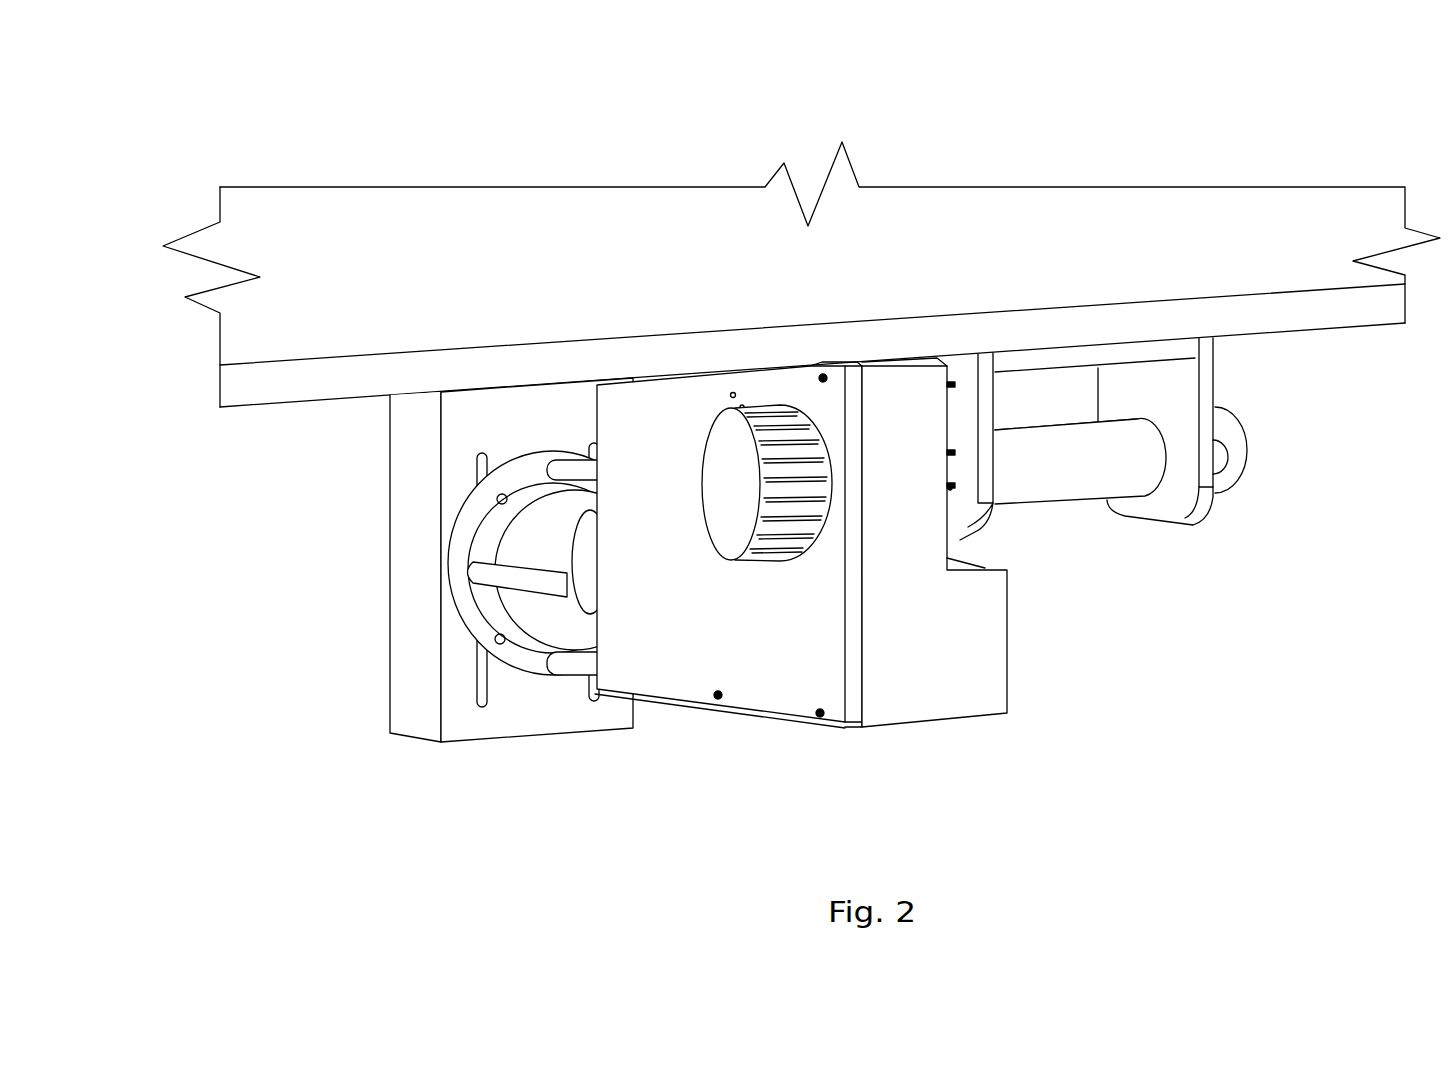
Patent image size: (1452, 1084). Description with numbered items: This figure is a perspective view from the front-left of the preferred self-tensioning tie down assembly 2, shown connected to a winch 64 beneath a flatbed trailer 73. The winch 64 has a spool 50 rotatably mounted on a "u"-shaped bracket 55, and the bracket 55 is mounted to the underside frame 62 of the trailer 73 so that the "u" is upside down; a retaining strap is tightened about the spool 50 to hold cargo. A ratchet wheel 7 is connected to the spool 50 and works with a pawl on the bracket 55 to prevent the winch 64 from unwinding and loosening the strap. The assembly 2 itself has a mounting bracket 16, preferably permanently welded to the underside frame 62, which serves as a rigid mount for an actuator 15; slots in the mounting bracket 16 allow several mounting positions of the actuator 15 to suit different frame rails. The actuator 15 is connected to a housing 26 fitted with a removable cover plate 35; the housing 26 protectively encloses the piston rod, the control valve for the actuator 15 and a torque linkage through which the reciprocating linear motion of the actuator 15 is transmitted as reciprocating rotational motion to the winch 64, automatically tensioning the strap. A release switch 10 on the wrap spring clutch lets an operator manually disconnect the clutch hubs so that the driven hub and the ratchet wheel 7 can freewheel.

The trailer 73 is at (578, 252).
The underside frame 62 is at (262, 407).
The mounting bracket 16 is at (408, 687).
The actuator 15 is at (523, 535).
The removable cover plate 35 is at (682, 617).
The release switch 10 is at (743, 482).
The housing 26 is at (938, 642).
The "u"-shaped bracket 55 is at (1206, 386).
The spool 50 is at (1060, 457).
The ratchet wheel 7 is at (950, 488).
The winch 64 is at (1213, 532).
The tie down assembly 2 is at (965, 753).